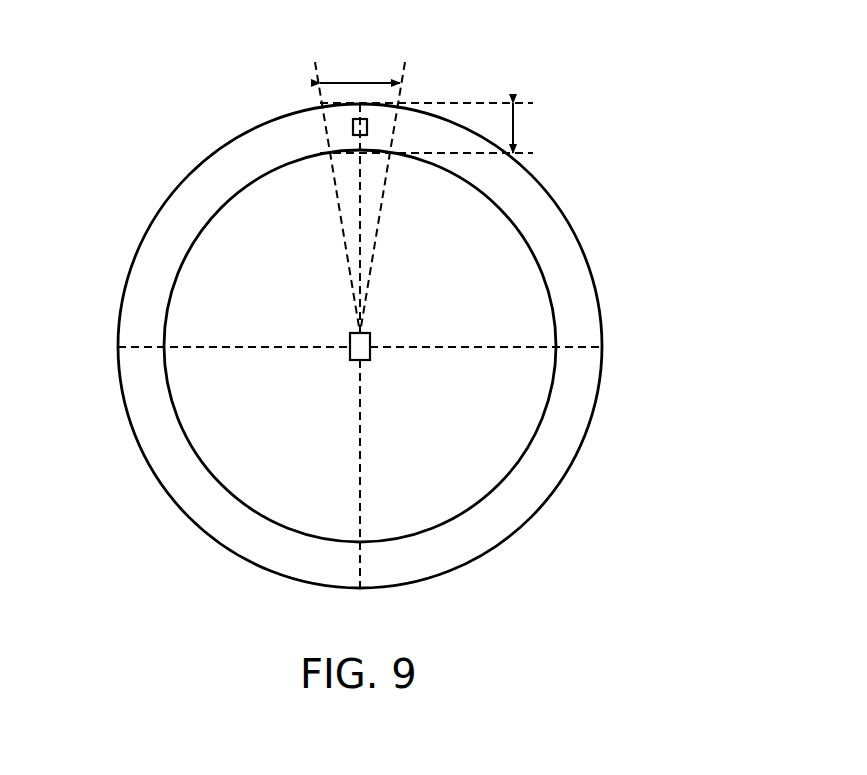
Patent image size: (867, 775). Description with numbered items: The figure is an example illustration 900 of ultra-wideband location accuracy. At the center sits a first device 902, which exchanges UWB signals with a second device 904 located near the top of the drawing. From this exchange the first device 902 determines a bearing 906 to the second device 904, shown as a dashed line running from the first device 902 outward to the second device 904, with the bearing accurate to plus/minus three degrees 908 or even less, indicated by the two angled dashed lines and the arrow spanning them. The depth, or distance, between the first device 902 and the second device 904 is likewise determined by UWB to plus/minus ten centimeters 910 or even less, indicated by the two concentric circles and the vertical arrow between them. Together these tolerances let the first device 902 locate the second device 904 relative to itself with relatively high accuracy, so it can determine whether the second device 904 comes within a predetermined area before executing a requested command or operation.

The example illustration 900 is at (166, 40).
The first device 902 is at (370, 348).
The second device 904 is at (352, 128).
The bearing 906 is at (358, 205).
The plus/minus three degrees 908 is at (450, 40).
The plus/minus ten centimeters 910 is at (672, 133).